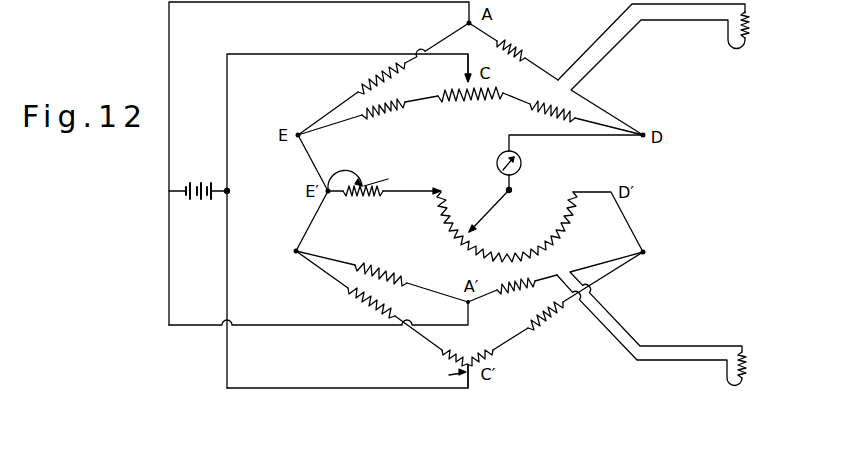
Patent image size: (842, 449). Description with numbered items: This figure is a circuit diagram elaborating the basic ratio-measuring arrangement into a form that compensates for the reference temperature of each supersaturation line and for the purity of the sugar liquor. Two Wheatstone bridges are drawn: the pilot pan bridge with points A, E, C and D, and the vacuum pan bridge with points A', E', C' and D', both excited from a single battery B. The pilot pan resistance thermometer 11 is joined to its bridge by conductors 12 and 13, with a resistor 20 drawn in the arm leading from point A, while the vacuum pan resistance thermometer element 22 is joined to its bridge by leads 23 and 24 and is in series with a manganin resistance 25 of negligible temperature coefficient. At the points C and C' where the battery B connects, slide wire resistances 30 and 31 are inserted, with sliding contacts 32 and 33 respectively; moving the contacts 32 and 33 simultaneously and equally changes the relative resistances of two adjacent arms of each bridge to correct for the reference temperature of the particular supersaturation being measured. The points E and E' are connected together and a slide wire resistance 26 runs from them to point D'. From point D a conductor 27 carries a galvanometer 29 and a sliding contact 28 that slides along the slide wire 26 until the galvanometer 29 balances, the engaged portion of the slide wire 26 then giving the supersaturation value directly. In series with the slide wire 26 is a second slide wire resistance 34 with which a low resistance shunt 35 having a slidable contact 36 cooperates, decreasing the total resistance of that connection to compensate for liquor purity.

The resistance thermometer 11 is at (752, 33).
The conductor 12 is at (612, 58).
The conductor 13 is at (618, 23).
The resistor 20 is at (523, 48).
The resistance thermometer element 22 is at (750, 377).
The lead 23 is at (712, 343).
The lead 24 is at (665, 362).
The resistance 25 is at (502, 294).
The slide wire resistance 26 is at (571, 212).
The conductor 27 is at (571, 137).
The sliding contact 28 is at (474, 233).
The galvanometer 29 is at (497, 163).
The slide wire resistance 30 is at (475, 95).
The slide wire resistance 31 is at (478, 354).
The sliding contact 32 is at (464, 78).
The sliding contact 33 is at (446, 376).
The second slide wire resistance 34 is at (358, 194).
The low resistance shunt 35 is at (361, 175).
The slidable contact 36 is at (385, 176).
The battery B is at (199, 179).